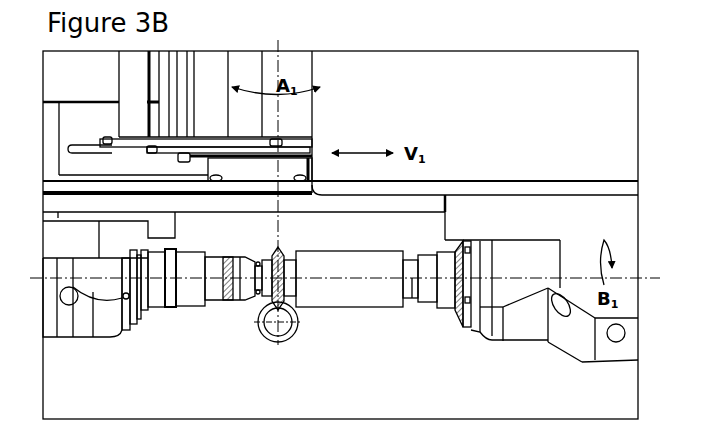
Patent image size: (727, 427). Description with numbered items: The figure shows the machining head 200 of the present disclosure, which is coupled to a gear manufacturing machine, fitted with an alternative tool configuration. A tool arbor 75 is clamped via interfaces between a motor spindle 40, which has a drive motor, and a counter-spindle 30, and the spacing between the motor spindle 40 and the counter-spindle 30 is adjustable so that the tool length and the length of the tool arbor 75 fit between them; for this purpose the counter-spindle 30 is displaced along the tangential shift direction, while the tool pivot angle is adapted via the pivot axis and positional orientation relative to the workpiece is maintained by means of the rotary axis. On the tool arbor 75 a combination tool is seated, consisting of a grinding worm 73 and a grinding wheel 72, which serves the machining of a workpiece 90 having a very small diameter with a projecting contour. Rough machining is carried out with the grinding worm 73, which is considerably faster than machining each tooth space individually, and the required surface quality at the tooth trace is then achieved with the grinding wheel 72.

The machining head 200 is at (495, 38).
The counter-spindle 30 is at (82, 315).
The motor spindle 40 is at (505, 295).
The grinding wheel 72 is at (282, 304).
The grinding worm 73 is at (387, 298).
The tool arbor 75 is at (413, 307).
The workpiece 90 is at (265, 338).